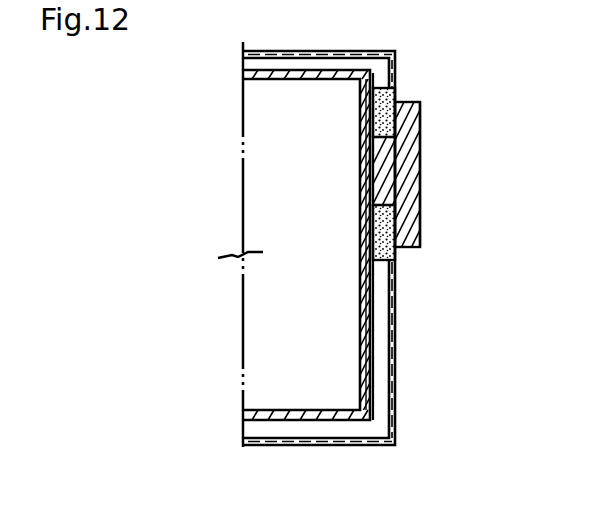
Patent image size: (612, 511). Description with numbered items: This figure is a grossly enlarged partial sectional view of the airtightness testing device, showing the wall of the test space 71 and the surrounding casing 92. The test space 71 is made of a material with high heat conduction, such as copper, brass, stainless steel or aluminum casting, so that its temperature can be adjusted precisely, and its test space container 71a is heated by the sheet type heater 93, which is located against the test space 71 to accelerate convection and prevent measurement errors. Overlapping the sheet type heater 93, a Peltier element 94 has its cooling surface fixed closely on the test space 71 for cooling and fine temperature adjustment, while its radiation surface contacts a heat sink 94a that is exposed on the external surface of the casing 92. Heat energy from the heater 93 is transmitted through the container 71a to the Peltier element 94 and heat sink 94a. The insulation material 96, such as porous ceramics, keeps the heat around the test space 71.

The test space 71 is at (309, 305).
The test space container 71a is at (318, 420).
The casing 92 is at (395, 375).
The sheet type heater 93 is at (373, 283).
The Peltier element 94 is at (403, 192).
The heat sink 94a is at (420, 140).
The insulation material 96 is at (395, 89).